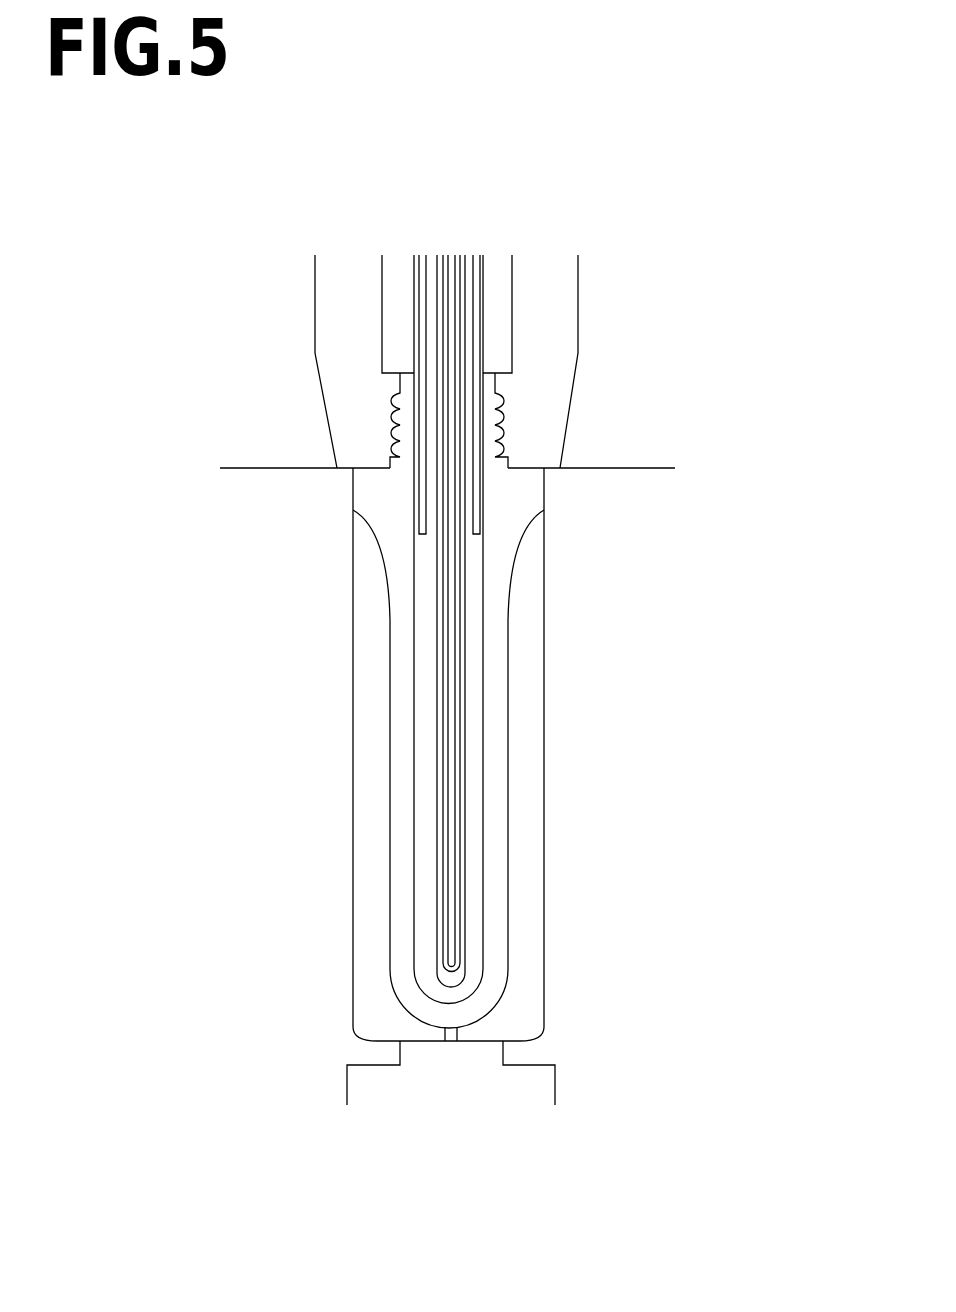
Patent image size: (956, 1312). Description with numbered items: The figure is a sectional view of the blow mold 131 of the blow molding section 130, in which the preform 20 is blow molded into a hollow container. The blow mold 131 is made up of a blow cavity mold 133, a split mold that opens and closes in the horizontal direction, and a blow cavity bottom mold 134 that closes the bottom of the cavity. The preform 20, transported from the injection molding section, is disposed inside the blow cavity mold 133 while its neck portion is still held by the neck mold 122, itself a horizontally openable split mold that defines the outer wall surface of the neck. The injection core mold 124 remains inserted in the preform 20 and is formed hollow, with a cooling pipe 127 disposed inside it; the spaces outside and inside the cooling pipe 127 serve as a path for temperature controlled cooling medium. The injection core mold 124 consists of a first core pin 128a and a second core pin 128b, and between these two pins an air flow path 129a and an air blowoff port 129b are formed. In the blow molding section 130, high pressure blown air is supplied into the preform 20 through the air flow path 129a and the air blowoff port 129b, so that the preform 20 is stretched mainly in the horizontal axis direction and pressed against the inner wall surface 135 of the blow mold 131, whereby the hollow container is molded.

The blow mold 131 is at (379, 289).
The blow molding section 130 is at (379, 289).
The neck mold 122 is at (337, 416).
The air flow path 129a is at (405, 500).
The air blowoff port 129b is at (395, 572).
The second core pin 128b is at (478, 488).
The first core pin 128a is at (485, 692).
The injection core mold 124 is at (618, 629).
The preform 20 is at (435, 770).
The inner wall surface 135 is at (372, 868).
The cooling pipe 127 is at (455, 952).
The blow cavity mold 133 is at (294, 1081).
The blow cavity bottom mold 134 is at (486, 1087).